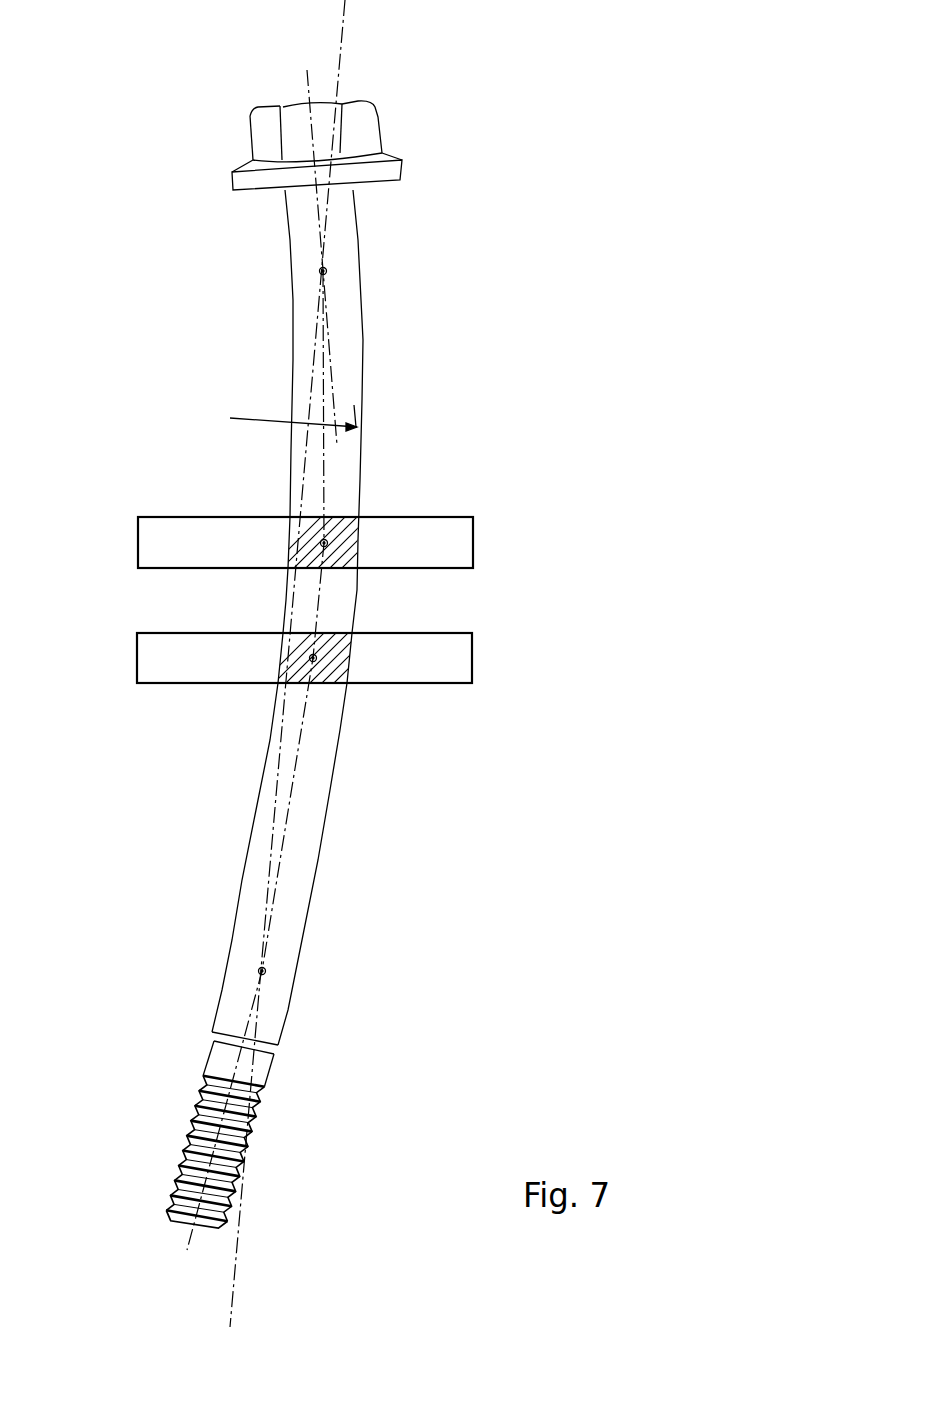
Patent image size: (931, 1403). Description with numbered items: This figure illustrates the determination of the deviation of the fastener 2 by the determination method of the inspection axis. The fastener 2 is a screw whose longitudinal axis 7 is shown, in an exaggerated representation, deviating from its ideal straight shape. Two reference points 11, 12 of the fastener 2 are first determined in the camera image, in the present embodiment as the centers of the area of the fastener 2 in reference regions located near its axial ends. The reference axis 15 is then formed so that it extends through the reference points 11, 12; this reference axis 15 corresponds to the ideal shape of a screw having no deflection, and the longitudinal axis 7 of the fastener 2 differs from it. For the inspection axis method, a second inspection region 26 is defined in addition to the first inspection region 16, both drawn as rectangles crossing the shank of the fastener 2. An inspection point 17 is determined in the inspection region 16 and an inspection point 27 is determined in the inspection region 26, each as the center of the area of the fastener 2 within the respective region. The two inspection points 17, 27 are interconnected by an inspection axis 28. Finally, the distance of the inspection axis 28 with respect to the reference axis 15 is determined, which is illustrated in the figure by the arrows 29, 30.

The fastener 2 is at (362, 273).
The longitudinal axis 7 is at (298, 787).
The reference point 11 is at (325, 267).
The reference point 12 is at (265, 968).
The reference axis 15 is at (347, 20).
The inspection region 16 is at (433, 542).
The inspection point 17 is at (326, 540).
The second inspection region 26 is at (440, 663).
The inspection point 27 is at (317, 659).
The inspection axis 28 is at (335, 443).
The arrow 29 is at (354, 405).
The arrow 30 is at (245, 418).